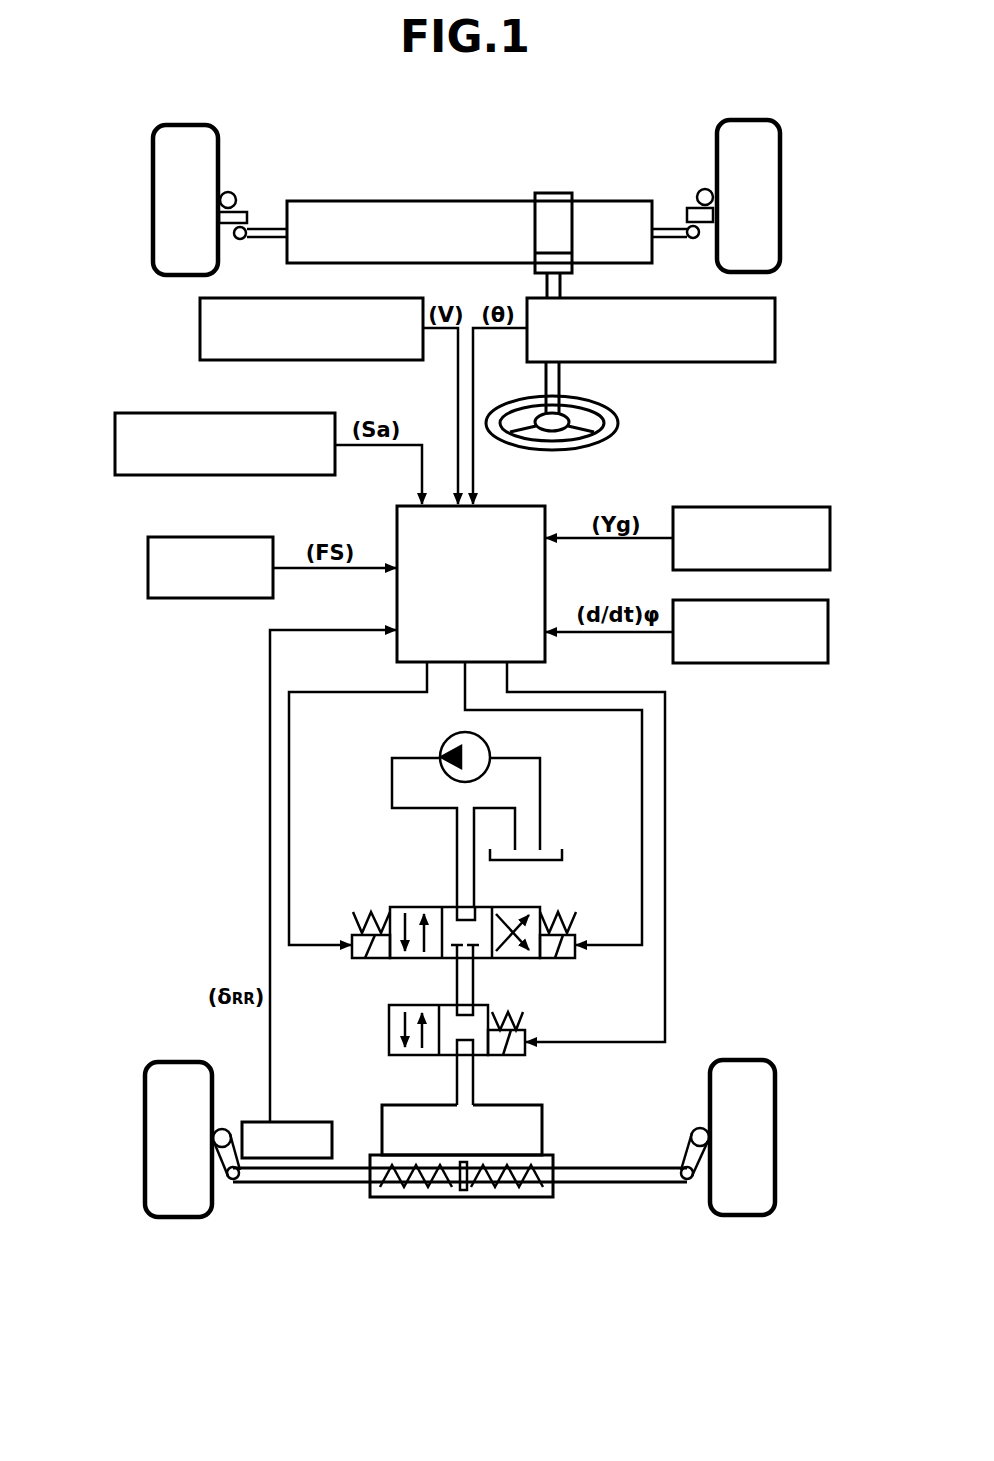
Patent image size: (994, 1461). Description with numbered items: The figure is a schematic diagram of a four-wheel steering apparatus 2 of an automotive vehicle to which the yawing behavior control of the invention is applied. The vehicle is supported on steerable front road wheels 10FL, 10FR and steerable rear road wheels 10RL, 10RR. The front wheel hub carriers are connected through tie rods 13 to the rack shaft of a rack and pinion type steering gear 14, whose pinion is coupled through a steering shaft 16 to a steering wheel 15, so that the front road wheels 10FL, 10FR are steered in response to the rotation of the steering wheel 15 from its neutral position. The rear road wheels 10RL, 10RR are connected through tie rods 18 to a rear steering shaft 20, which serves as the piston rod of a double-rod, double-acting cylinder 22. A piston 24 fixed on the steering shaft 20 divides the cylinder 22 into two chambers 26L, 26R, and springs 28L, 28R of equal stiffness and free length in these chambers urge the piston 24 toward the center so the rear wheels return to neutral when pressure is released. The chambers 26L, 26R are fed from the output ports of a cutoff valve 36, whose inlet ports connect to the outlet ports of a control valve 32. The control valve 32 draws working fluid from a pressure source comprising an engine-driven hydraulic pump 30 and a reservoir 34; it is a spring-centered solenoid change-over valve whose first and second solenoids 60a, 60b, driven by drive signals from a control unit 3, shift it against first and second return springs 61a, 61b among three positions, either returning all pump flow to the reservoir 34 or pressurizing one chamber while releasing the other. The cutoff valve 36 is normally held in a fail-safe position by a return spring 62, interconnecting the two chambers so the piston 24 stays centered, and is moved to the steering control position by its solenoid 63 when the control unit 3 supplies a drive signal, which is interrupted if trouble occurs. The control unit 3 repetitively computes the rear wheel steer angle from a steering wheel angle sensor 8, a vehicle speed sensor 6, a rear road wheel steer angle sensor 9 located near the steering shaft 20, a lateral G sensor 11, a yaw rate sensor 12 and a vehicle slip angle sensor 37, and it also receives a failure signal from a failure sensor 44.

The front left road wheel 10FL is at (153, 168).
The front right road wheel 10FR is at (780, 166).
The rear left road wheel 10RL is at (145, 1105).
The rear right road wheel 10RR is at (775, 1109).
The tie rod 13 is at (243, 240).
The rack and pinion type steering gear 14 is at (548, 190).
The vehicle speed sensor 6 is at (200, 327).
The steering wheel angle sensor 8 is at (775, 328).
The vehicle slip angle sensor 37 is at (115, 440).
The steering shaft 16 is at (560, 383).
The steering wheel 15 is at (619, 425).
The control unit 3 is at (543, 506).
The failure sensor 44 is at (148, 567).
The lateral G sensor 11 is at (830, 538).
The yaw rate sensor 12 is at (828, 632).
The rear wheel steering system 2 is at (701, 803).
The hydraulic pump 30 is at (485, 749).
The reservoir 34 is at (562, 850).
The control valve 32 is at (538, 907).
The first return spring 61a is at (361, 911).
The second return spring 61b is at (562, 912).
The first solenoid 60a is at (367, 958).
The second solenoid 60b is at (558, 958).
The return spring 62 is at (525, 1015).
The cutoff valve solenoid 63 is at (505, 1055).
The cutoff valve 36 is at (400, 1055).
The double-rod double-acting cylinder 22 is at (553, 1160).
The piston 24 is at (463, 1197).
The first (left) pressure chamber 26L is at (393, 1197).
The second (right) pressure chamber 26R is at (542, 1197).
The left spring 28L is at (430, 1197).
The right spring 28R is at (507, 1197).
The rear steering shaft 20 is at (625, 1182).
The tie rod 18 is at (226, 1128).
The rear road wheel steer angle sensor 9 is at (272, 1150).